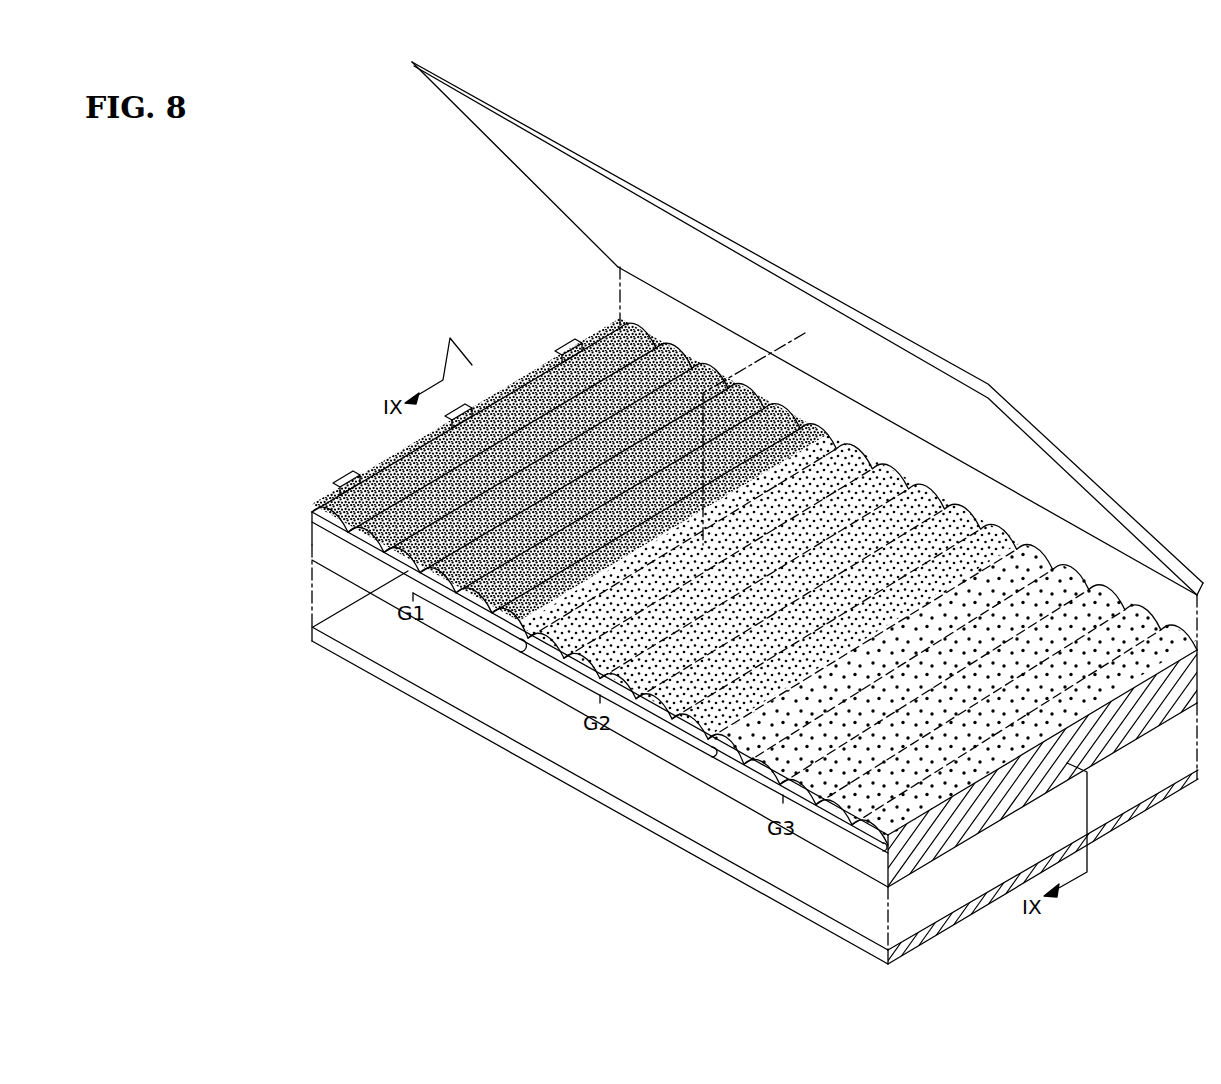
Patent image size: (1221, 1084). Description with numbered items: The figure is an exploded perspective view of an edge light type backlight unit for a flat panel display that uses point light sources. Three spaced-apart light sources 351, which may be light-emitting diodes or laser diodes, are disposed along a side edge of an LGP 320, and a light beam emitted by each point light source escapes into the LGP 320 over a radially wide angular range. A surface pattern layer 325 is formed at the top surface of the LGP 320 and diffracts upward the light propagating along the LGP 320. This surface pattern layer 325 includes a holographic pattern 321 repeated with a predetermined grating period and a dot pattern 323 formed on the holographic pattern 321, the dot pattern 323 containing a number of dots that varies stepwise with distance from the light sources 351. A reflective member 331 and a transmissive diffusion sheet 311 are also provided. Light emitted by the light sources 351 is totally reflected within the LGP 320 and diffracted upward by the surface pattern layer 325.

The transmissive diffusion sheet 311 is at (740, 245).
The LGP 320 is at (317, 547).
The holographic pattern 321 is at (787, 758).
The dot pattern 323 is at (717, 745).
The surface pattern layer 325 is at (612, 889).
The reflective member 331 is at (552, 771).
The light sources 351 is at (572, 342).